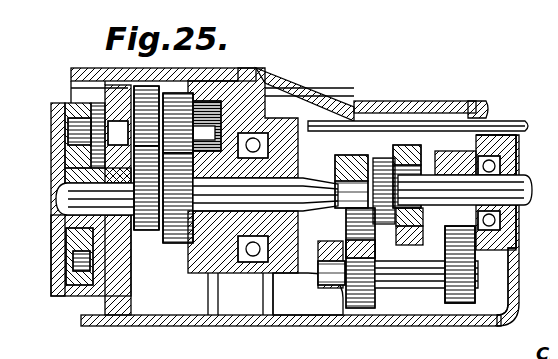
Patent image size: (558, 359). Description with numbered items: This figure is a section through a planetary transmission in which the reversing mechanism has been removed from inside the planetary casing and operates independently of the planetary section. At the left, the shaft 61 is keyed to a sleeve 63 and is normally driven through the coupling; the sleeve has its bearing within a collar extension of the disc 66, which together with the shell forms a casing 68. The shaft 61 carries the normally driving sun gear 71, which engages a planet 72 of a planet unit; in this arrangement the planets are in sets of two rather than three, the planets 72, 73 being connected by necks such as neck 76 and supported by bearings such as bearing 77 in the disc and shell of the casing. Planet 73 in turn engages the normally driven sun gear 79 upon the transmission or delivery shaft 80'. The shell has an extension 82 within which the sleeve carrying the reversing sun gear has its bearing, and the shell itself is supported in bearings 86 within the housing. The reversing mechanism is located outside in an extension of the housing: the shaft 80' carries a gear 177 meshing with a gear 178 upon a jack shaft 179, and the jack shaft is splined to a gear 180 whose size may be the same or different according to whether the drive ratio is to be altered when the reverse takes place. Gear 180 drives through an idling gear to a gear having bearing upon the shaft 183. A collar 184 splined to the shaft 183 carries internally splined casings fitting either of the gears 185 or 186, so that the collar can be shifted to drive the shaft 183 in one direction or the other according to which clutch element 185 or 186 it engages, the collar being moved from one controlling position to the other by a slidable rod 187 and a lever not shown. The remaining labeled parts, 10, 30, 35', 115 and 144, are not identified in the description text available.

The sleeve 63 is at (50, 96).
The bearing cap 144 is at (65, 106).
The bearing 77 is at (98, 134).
The neck 76 is at (204, 126).
The planet gear 72 is at (139, 78).
The planet gear 73 is at (186, 86).
The shell extension 82 is at (223, 103).
The bearings 86 is at (263, 123).
The section line 30 is at (458, 64).
The slidable rod 187 is at (475, 113).
The gear 180 is at (485, 304).
The casing 10 is at (74, 288).
The bearing retainer 115 is at (97, 290).
The disc 66 is at (110, 268).
The shaft 61 is at (96, 199).
The sun gear 71 is at (137, 214).
The sun gear 79 is at (167, 228).
The shaft 80' is at (265, 194).
The casing 68 is at (205, 307).
The housing wall 35' is at (308, 310).
The gear 177 is at (340, 147).
The gear 178 is at (333, 233).
The clutch element 186 is at (455, 143).
The collar 184 is at (432, 250).
The clutch element 185 is at (415, 233).
The jack shaft 179 is at (418, 294).
The shaft 183 is at (465, 192).